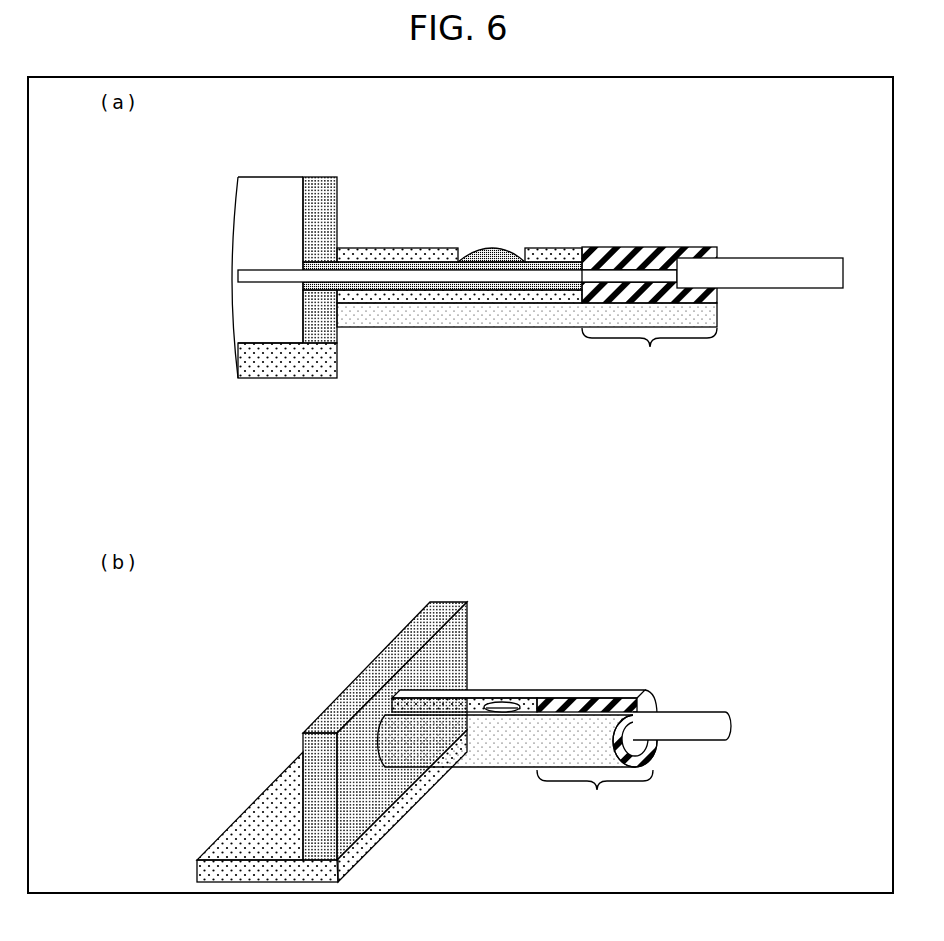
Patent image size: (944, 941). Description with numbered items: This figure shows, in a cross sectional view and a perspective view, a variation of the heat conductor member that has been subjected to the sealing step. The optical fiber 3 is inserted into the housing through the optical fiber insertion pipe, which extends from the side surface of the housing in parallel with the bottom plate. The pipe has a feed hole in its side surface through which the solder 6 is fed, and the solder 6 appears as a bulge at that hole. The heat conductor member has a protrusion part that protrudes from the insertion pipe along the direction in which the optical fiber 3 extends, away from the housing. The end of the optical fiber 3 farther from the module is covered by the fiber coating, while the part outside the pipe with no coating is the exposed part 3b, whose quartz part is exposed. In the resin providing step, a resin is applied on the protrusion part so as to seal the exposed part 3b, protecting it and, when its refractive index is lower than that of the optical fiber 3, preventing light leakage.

The optical fiber 3 is at (267, 284).
The exposed part 3b is at (618, 276).
The solder 6 is at (490, 254).